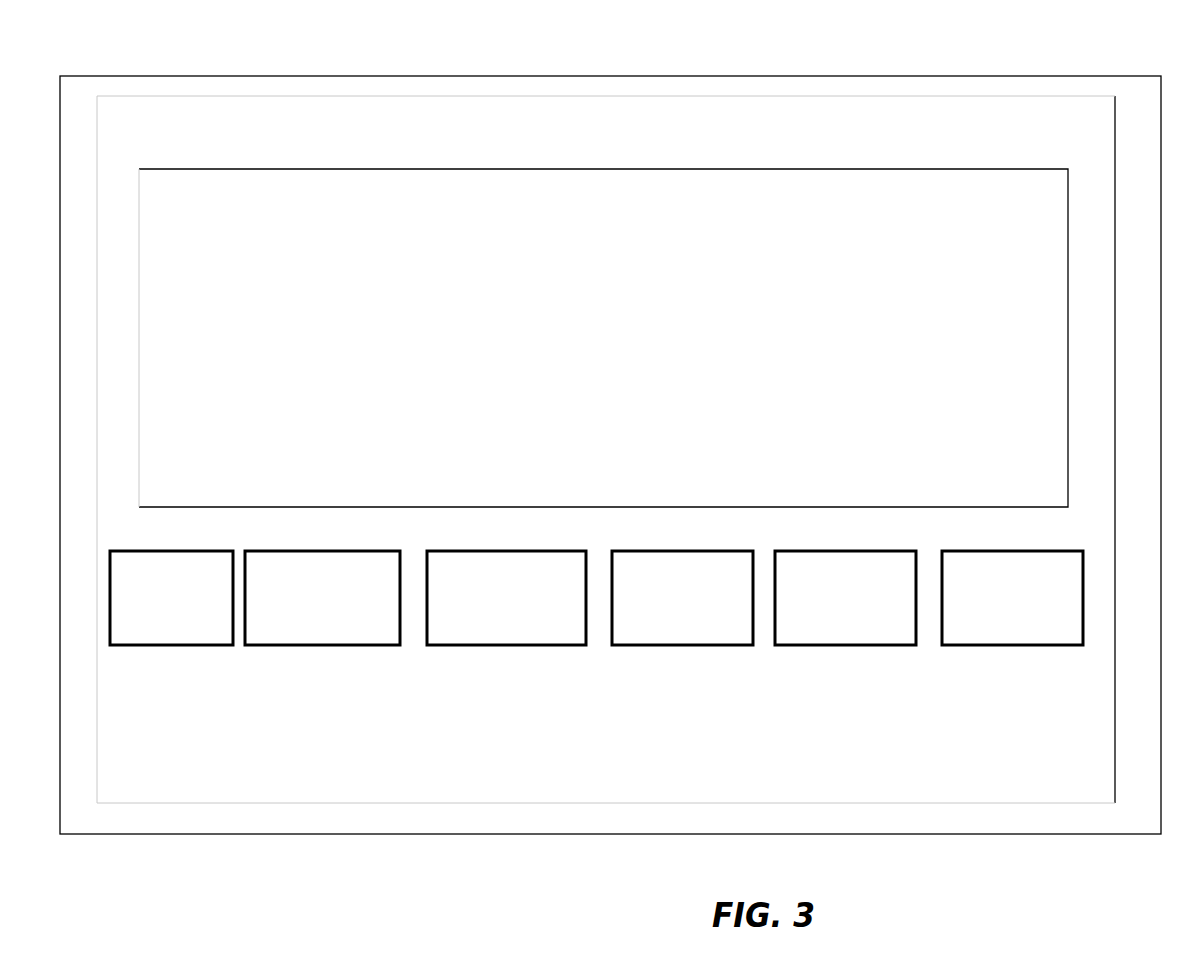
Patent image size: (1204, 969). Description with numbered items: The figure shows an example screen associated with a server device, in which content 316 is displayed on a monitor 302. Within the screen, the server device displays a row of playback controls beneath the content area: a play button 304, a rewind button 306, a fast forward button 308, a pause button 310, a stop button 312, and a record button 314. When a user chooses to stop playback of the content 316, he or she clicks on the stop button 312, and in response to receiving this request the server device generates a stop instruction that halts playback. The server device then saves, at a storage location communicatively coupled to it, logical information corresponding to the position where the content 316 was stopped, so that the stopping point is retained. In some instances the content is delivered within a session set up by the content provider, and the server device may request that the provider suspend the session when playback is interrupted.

The monitor 302 is at (698, 76).
The play button 304 is at (152, 624).
The rewind button 306 is at (303, 624).
The fast forward button 308 is at (487, 624).
The pause button 310 is at (663, 624).
The stop button 312 is at (826, 624).
The record button 314 is at (993, 624).
The content 316 is at (747, 169).